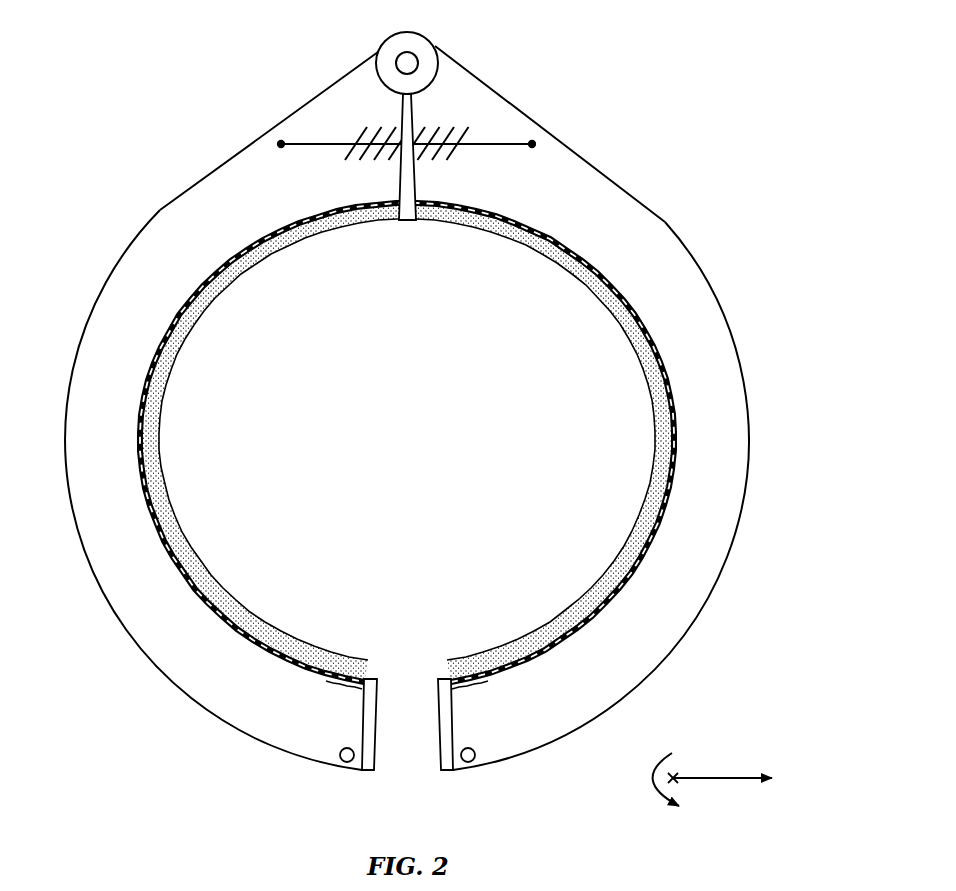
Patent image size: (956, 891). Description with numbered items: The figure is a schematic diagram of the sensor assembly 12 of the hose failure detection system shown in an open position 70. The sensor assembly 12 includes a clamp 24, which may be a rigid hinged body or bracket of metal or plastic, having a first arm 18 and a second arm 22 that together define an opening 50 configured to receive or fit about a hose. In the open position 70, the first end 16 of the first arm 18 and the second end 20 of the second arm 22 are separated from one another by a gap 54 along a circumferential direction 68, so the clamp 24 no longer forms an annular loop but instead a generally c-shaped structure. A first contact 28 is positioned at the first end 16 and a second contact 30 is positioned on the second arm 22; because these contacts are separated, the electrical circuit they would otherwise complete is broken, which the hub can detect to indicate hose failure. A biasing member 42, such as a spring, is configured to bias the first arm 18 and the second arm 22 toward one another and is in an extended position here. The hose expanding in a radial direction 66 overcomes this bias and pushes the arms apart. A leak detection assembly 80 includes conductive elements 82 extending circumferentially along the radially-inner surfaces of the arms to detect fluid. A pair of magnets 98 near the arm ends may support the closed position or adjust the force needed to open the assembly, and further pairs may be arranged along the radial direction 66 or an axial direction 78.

The sensor assembly 12 is at (670, 167).
The first end 16 is at (370, 677).
The first arm 18 is at (111, 276).
The second end 20 is at (443, 677).
The second arm 22 is at (701, 276).
The clamp 24 is at (745, 332).
The first contact 28 is at (378, 713).
The second contact 30 is at (440, 748).
The biasing member 42 is at (546, 124).
The opening 50 is at (396, 459).
The gap 54 is at (395, 741).
The radial direction 66 is at (718, 780).
The circumferential direction 68 is at (647, 785).
The open position 70 is at (703, 207).
The axial direction 78 is at (674, 776).
The leak detection assembly 80 is at (327, 236).
The conductive elements 82 is at (242, 258).
The pair of magnets 98 is at (340, 757).